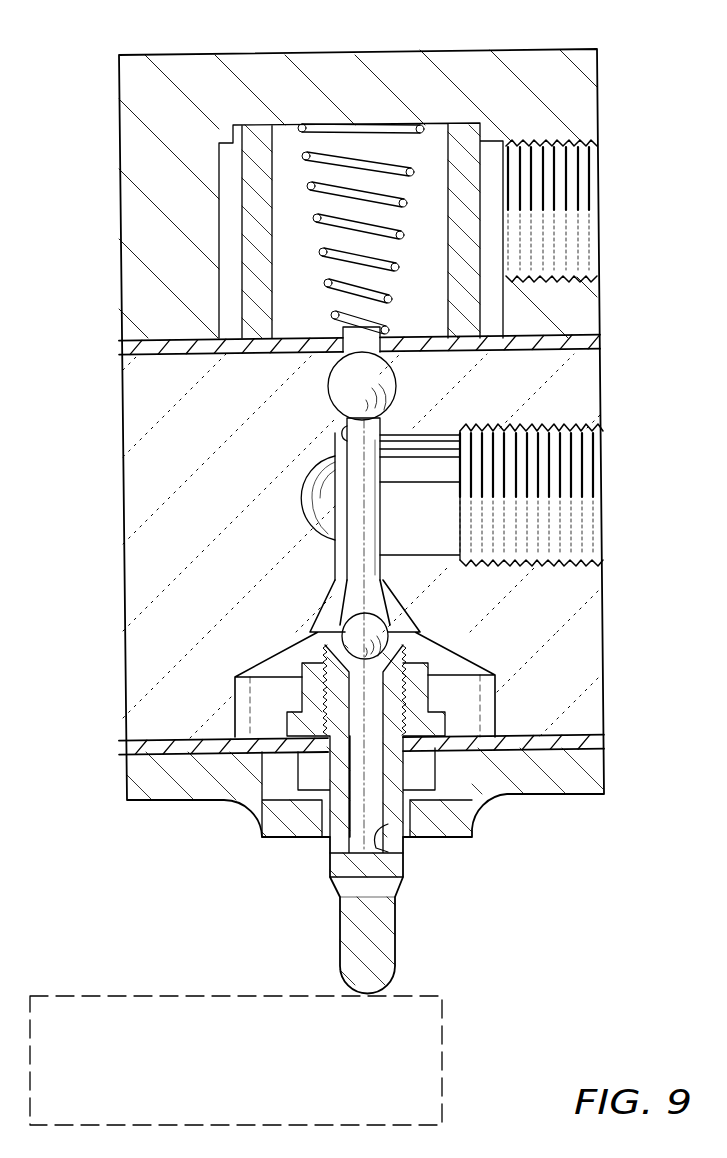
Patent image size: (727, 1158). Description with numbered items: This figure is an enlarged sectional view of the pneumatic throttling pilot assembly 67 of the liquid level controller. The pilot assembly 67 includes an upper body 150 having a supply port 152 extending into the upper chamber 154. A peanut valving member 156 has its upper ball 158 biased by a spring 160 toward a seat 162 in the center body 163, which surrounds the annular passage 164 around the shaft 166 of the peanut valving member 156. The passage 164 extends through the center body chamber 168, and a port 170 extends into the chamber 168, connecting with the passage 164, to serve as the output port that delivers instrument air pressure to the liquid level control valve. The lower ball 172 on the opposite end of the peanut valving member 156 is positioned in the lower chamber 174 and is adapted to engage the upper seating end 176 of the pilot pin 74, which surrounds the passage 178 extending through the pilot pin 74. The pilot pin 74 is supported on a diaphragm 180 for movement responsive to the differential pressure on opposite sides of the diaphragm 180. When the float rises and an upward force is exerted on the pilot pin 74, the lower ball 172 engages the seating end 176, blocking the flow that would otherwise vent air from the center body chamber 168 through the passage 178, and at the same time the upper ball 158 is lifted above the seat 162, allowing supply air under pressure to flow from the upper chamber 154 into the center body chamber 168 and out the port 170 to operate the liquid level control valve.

The upper body 150 is at (128, 147).
The supply port 152 is at (558, 145).
The upper chamber 154 is at (435, 148).
The peanut valving member 156 is at (388, 456).
The upper ball 158 is at (322, 372).
The spring 160 is at (402, 265).
The seat 162 is at (388, 400).
The center body 163 is at (126, 586).
The annular passage 164 is at (344, 428).
The shaft 166 is at (346, 472).
The center body chamber 168 is at (322, 498).
The port 170 is at (560, 435).
The lower ball 172 is at (396, 622).
The lower chamber 174 is at (335, 594).
The upper seating end 176 is at (346, 630).
The passage 178 is at (390, 850).
The diaphragm 180 is at (600, 746).
The pilot pin 74 is at (398, 930).
The pilot assembly 67 is at (608, 884).